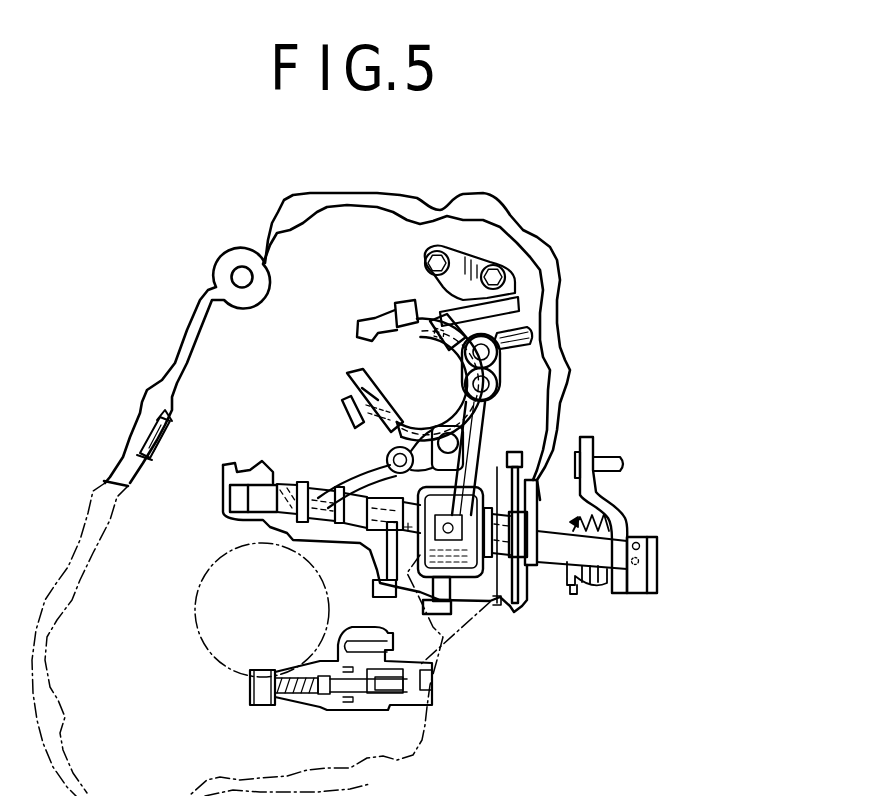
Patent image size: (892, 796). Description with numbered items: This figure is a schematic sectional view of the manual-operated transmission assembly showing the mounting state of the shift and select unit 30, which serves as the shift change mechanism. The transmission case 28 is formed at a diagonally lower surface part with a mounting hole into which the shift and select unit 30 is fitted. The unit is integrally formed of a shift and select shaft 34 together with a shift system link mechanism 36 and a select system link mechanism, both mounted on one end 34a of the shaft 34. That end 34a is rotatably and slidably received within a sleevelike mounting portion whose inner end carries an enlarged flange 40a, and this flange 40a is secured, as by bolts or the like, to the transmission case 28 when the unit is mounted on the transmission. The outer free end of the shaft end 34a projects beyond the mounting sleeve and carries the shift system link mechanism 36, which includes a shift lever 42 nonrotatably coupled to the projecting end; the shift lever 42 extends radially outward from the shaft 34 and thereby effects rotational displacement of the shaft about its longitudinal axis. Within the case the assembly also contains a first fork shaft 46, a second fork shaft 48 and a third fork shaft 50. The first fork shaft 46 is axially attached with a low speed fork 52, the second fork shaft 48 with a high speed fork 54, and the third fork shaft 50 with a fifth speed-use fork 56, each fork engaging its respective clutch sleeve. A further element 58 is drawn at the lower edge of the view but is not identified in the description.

The transmission case 28 is at (543, 250).
The shift and select unit 30 is at (490, 542).
The shift and select shaft 34 is at (407, 577).
The one end of the shift and select shaft 34a is at (558, 545).
The shift system link mechanism 36 is at (601, 441).
The enlarged flange 40a is at (513, 615).
The shift lever 42 is at (615, 507).
The first fork shaft 46 is at (345, 478).
The second fork shaft 48 is at (487, 432).
The third fork shaft 50 is at (517, 327).
The low speed fork 52 is at (345, 442).
The high speed fork 54 is at (365, 427).
The fifth speed-use fork 56 is at (413, 300).
The cable end 58 is at (473, 711).